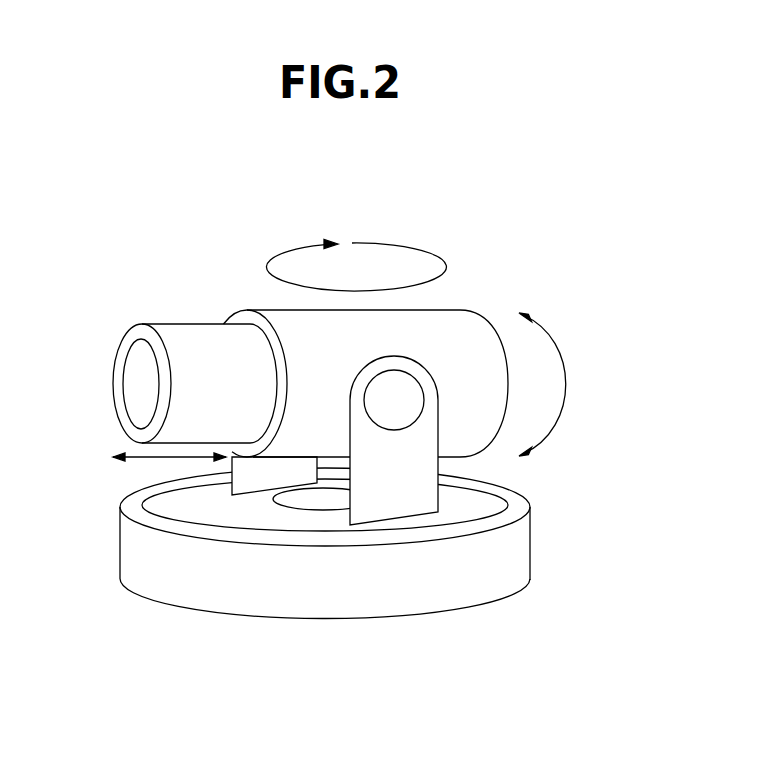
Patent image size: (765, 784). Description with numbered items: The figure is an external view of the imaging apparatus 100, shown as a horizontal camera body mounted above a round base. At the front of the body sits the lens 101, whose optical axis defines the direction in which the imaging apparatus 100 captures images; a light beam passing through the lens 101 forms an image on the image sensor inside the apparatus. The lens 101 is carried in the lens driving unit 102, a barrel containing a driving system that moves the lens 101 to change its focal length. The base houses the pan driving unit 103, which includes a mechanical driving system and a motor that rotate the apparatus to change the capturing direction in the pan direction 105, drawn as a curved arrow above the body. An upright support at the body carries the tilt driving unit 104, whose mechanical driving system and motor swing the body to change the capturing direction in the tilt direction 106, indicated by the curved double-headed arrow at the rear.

The imaging apparatus 100 is at (457, 327).
The lens 101 is at (135, 381).
The lens driving unit 102 is at (188, 338).
The pan driving unit 103 is at (322, 502).
The tilt driving unit 104 is at (386, 385).
The pan direction 105 is at (279, 251).
The tilt direction 106 is at (566, 378).